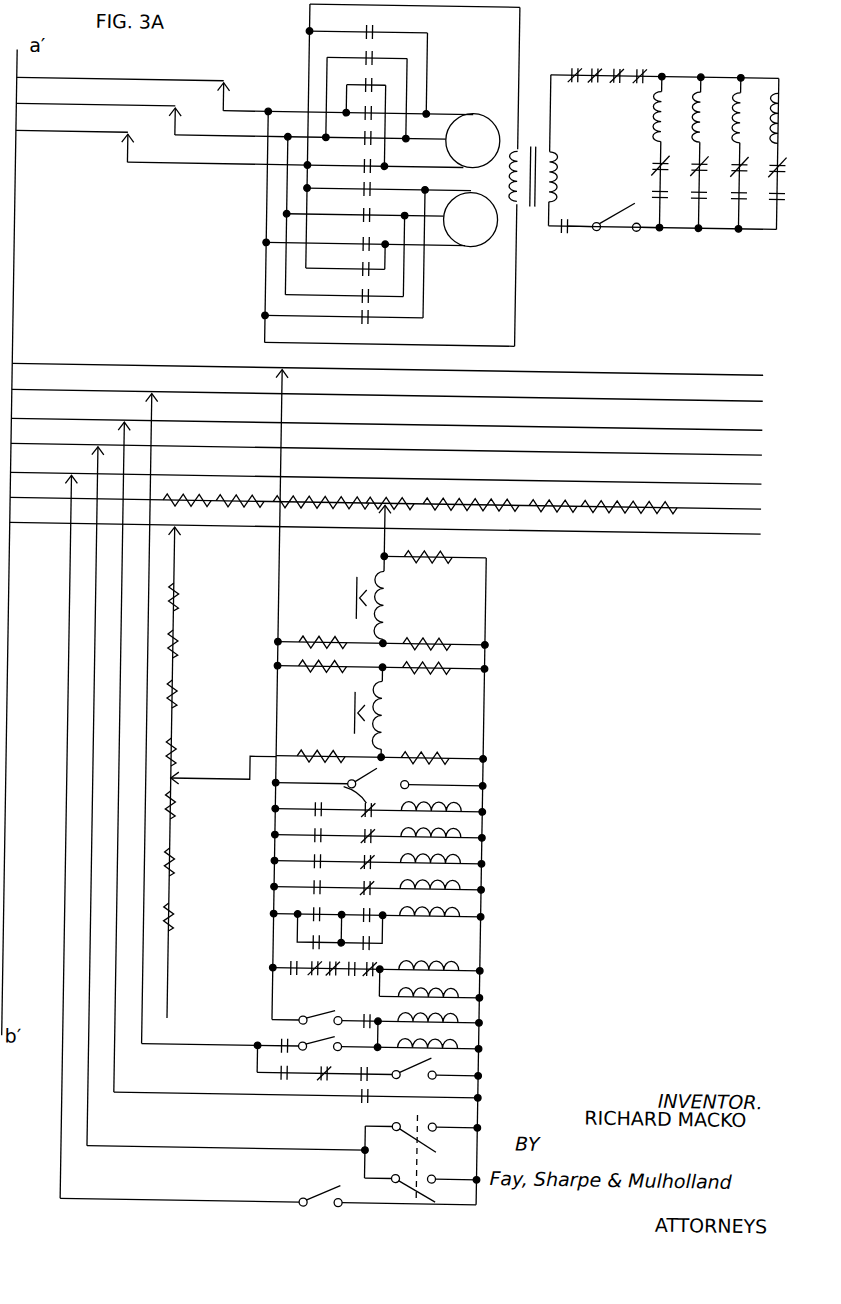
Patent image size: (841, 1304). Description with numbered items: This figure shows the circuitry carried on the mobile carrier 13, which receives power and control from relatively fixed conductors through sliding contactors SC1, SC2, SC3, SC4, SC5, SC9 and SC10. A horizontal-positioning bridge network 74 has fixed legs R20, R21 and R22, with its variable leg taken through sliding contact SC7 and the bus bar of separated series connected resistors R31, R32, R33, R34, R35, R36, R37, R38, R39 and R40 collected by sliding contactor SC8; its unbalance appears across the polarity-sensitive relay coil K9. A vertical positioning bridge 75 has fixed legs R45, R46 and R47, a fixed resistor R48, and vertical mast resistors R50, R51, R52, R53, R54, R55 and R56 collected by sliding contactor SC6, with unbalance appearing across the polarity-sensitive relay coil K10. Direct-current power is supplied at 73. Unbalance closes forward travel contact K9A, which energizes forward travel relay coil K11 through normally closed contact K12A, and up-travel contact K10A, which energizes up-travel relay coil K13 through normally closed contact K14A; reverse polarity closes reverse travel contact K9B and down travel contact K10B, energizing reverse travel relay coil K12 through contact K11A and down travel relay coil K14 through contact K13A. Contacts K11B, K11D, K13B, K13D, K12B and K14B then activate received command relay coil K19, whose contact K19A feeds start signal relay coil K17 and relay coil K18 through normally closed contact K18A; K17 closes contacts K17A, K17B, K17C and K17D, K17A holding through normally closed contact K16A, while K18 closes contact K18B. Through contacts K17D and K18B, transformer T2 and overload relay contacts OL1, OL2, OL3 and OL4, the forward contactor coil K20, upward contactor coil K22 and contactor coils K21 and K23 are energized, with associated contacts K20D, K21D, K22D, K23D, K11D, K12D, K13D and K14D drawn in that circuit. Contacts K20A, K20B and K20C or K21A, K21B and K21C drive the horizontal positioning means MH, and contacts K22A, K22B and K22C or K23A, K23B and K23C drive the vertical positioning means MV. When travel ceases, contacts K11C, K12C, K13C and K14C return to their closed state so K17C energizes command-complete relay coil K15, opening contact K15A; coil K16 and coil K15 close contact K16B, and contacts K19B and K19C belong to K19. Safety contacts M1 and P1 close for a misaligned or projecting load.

The sliding contactor SC1 is at (66, 483).
The sliding contactor SC2 is at (92, 454).
The sliding contactor SC3 is at (118, 430).
The sliding contactor SC4 is at (145, 401).
The sliding contactor SC5 is at (176, 540).
The sliding contactor SC6 is at (178, 778).
The sliding contact SC7 is at (282, 375).
The sliding contactor SC8 is at (118, 142).
The sliding contactor SC9 is at (164, 112).
The sliding contactor SC10 is at (212, 84).
The normally open contact K20A is at (366, 31).
The normally open contact K20B is at (366, 57).
The normally open contact K20C is at (366, 84).
The normally open contact K21A is at (366, 112).
The normally open contact K21B is at (352, 134).
The normally open contact K21C is at (366, 165).
The normally open contact K22A is at (366, 188).
The normally open contact K22B is at (364, 212).
The normally open contact K22C is at (366, 245).
The normally open contact K23A is at (366, 270).
The normally open contact K23B is at (366, 297).
The normally open contact K23C is at (366, 318).
The horizontal travel positioning means MH is at (472, 140).
The vertical travel positioning means MV is at (470, 219).
The transformer T2 is at (545, 142).
The overload relay contact OL1 is at (563, 64).
The overload relay contact OL2 is at (586, 64).
The overload relay contact OL3 is at (608, 64).
The overload relay contact OL4 is at (632, 64).
The forward contactor coil K20 is at (646, 110).
The contactor coil K21 is at (693, 86).
The upward contactor coil K22 is at (733, 86).
The contactor coil K23 is at (771, 88).
The relay contact K21D is at (644, 159).
The relay contact K20D is at (644, 187).
The relay contact K23D is at (700, 200).
The relay contact K12D is at (660, 232).
The normally open contact K13D is at (728, 232).
The relay contact K14D is at (745, 235).
The relay contact K22D is at (772, 205).
The normally open contact K17D is at (555, 232).
The normally open contact K18B is at (604, 236).
The normally open contact K11D is at (628, 229).
The series connected resistor R31 is at (184, 496).
The series connected resistor R32 is at (237, 496).
The series connected resistor R33 is at (294, 496).
The series connected resistor R34 is at (342, 496).
The series connected resistor R35 is at (387, 496).
The series connected resistor R36 is at (444, 496).
The series connected resistor R37 is at (492, 496).
The series connected resistor R38 is at (550, 496).
The series connected resistor R39 is at (602, 496).
The series connected resistor R40 is at (650, 496).
The vertical mast resistor R50 is at (176, 600).
The vertical mast resistor R51 is at (176, 646).
The vertical mast resistor R52 is at (176, 696).
The vertical mast resistor R53 is at (176, 748).
The vertical mast resistor R54 is at (170, 806).
The vertical mast resistor R55 is at (170, 863).
The vertical mast resistor R56 is at (170, 916).
The fixed resistor R20 is at (440, 556).
The fixed resistor R21 is at (420, 640).
The fixed resistor R22 is at (318, 640).
The fixed resistor R45 is at (330, 670).
The fixed resistor R46 is at (440, 664).
The fixed resistor R47 is at (440, 754).
The fixed resistor R48 is at (312, 752).
The polarity-sensitive relay coil K9 is at (392, 603).
The polarity-sensitive relay coil K10 is at (392, 716).
The horizontal-positioning bridge network 74 is at (328, 598).
The vertical positioning bridge 75 is at (329, 733).
The D-C power supply 73 is at (401, 788).
The normally closed contact K12A is at (349, 782).
The forward travel relay coil K11 is at (400, 799).
The reverse travel relay coil K12 is at (401, 830).
The up-travel relay coil K13 is at (385, 868).
The down travel relay coil K14 is at (387, 898).
The received command relay coil K19 is at (387, 935).
The command-complete relay coil K15 is at (383, 987).
The relay coil K16 is at (463, 992).
The start signal relay coil K17 is at (400, 1063).
The relay coil K18 is at (361, 1043).
The forward travel contact K9A is at (314, 806).
The reverse travel contact K9B is at (314, 832).
The normally closed contact K11A is at (364, 836).
The up-travel contact K10A is at (314, 860).
The normally closed contact K14A is at (364, 865).
The down travel contact K10B is at (314, 887).
The normally closed contact K13A is at (364, 891).
The normally open contact K11B is at (314, 918).
The normally open contact K12B is at (314, 944).
The normally open contact K13B is at (378, 920).
The normally open contact K14B is at (378, 946).
The normally open contact K17C is at (292, 966).
The normally closed contact K11C is at (316, 972).
The normally closed contact K12C is at (334, 974).
The normally closed contact K13C is at (354, 975).
The normally closed contact K14C is at (376, 975).
The normally closed contact K16A is at (304, 1024).
The normally open contact K17A is at (370, 1028).
The normally open contact K19A is at (284, 1049).
The normally closed contact K18A is at (284, 1072).
The normally closed contact K15A is at (328, 1080).
The normally open contact K17B is at (378, 1076).
The relay contact K19B is at (283, 1078).
The relay contact K19C is at (378, 1098).
The normally open contact M1 is at (372, 1130).
The normally open contact P1 is at (372, 1166).
The normally open contact K16B is at (326, 1192).
The mobile carrier 13 is at (208, 1208).